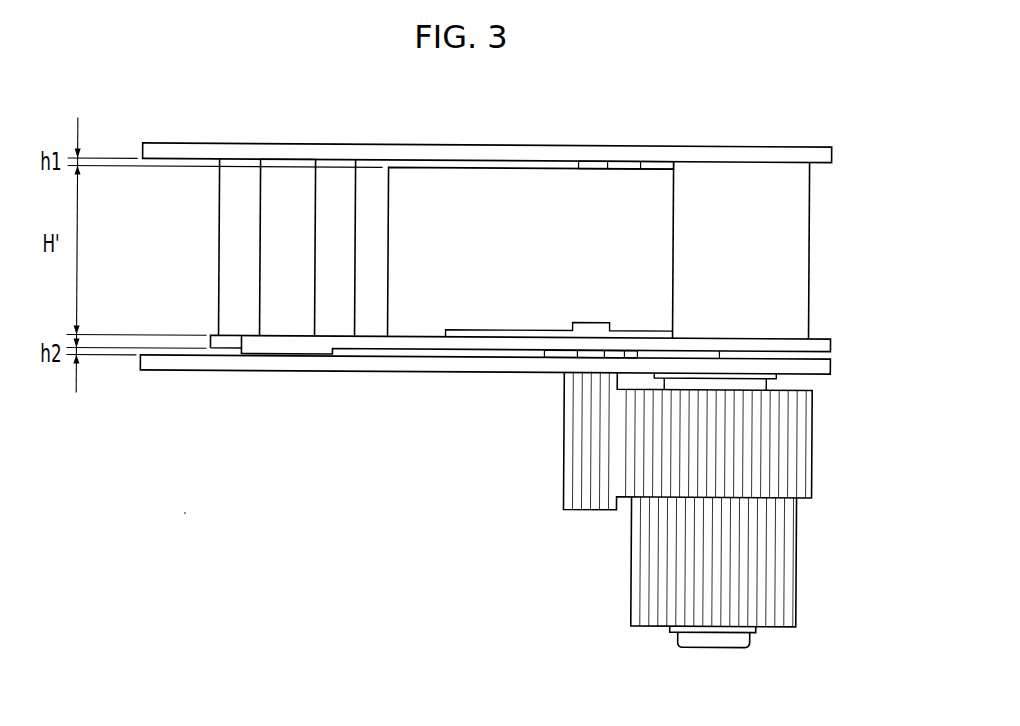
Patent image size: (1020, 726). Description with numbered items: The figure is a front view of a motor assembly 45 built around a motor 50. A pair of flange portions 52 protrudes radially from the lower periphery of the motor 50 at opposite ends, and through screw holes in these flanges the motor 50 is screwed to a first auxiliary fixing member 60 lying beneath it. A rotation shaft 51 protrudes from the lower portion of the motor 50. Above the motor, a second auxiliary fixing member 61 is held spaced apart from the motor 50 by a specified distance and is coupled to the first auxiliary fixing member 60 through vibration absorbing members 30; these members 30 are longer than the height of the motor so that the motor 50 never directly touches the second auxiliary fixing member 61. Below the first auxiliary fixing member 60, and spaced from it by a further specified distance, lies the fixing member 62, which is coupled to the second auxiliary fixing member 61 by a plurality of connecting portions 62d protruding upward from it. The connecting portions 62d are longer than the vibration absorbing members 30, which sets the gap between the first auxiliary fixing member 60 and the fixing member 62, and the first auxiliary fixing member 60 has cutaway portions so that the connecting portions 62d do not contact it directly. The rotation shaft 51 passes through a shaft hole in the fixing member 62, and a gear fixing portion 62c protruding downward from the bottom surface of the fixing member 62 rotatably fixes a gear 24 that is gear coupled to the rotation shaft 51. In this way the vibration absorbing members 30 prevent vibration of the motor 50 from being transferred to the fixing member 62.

The gear 24 is at (778, 567).
The vibration absorbing members 30 is at (230, 196).
The motor assembly 45 is at (192, 523).
The motor 50 is at (476, 185).
The rotation shaft 51 is at (565, 430).
The flange portions 52 is at (470, 333).
The first auxiliary fixing member 60 is at (831, 344).
The second auxiliary fixing member 61 is at (831, 156).
The fixing member 62 is at (831, 370).
The gear fixing portion 62c is at (762, 386).
The connecting portions 62d is at (285, 183).